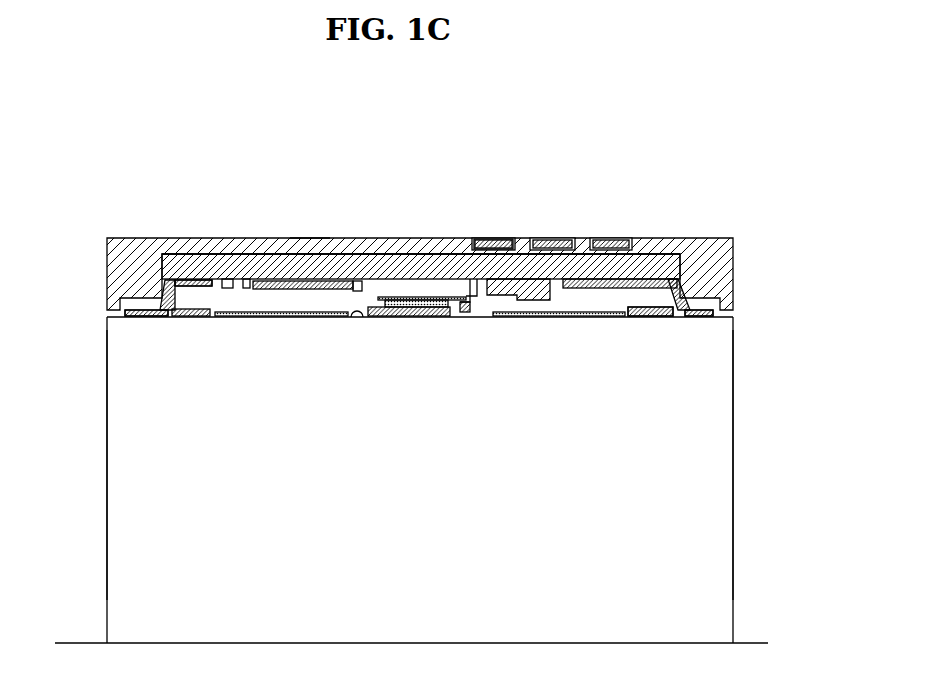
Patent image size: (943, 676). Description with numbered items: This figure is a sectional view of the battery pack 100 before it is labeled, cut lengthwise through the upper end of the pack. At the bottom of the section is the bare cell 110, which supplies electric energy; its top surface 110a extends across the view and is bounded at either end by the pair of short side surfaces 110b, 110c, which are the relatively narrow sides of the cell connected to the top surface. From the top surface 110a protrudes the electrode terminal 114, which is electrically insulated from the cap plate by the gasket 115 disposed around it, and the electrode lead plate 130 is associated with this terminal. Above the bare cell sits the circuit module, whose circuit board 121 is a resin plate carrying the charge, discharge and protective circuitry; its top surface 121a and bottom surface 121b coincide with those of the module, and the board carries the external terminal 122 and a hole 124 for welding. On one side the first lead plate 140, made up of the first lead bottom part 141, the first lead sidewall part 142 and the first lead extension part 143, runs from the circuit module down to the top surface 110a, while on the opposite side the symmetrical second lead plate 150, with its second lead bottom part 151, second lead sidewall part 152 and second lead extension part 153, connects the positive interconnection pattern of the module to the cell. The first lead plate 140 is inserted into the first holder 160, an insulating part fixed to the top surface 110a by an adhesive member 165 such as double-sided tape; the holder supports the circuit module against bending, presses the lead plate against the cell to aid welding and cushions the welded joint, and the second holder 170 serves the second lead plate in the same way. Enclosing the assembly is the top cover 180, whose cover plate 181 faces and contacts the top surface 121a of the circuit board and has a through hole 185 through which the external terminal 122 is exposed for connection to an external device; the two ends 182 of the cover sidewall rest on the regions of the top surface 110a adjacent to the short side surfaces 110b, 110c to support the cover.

The battery pack 100 is at (671, 144).
The bare cell 110 is at (741, 408).
The top surface 110a is at (361, 322).
The short side surface 110b is at (106, 468).
The short side surface 110c is at (735, 468).
The electrode terminal 114 is at (445, 318).
The gasket 115 is at (405, 318).
The circuit board 121 is at (272, 258).
The top surface of circuit board 121a is at (311, 240).
The bottom surface of circuit board 121b is at (353, 284).
The external terminal 122 is at (603, 236).
The hole for welding 124 is at (444, 262).
The electrode lead plate 130 is at (417, 295).
The first lead plate 140 is at (703, 320).
The first lead bottom part 141 is at (640, 280).
The first lead sidewall part 142 is at (678, 266).
The first lead extension part 143 is at (710, 318).
The second lead plate 150 is at (139, 321).
The second lead bottom part 151 is at (194, 278).
The second lead sidewall part 152 is at (166, 278).
The second lead extension part 153 is at (128, 313).
The first holder 160 is at (682, 306).
The adhesive member 165 is at (257, 320).
The second holder 170 is at (181, 318).
The top cover 180 is at (420, 283).
The cover plate 181 is at (230, 246).
The ends 182 is at (124, 266).
The through hole 185 is at (506, 236).